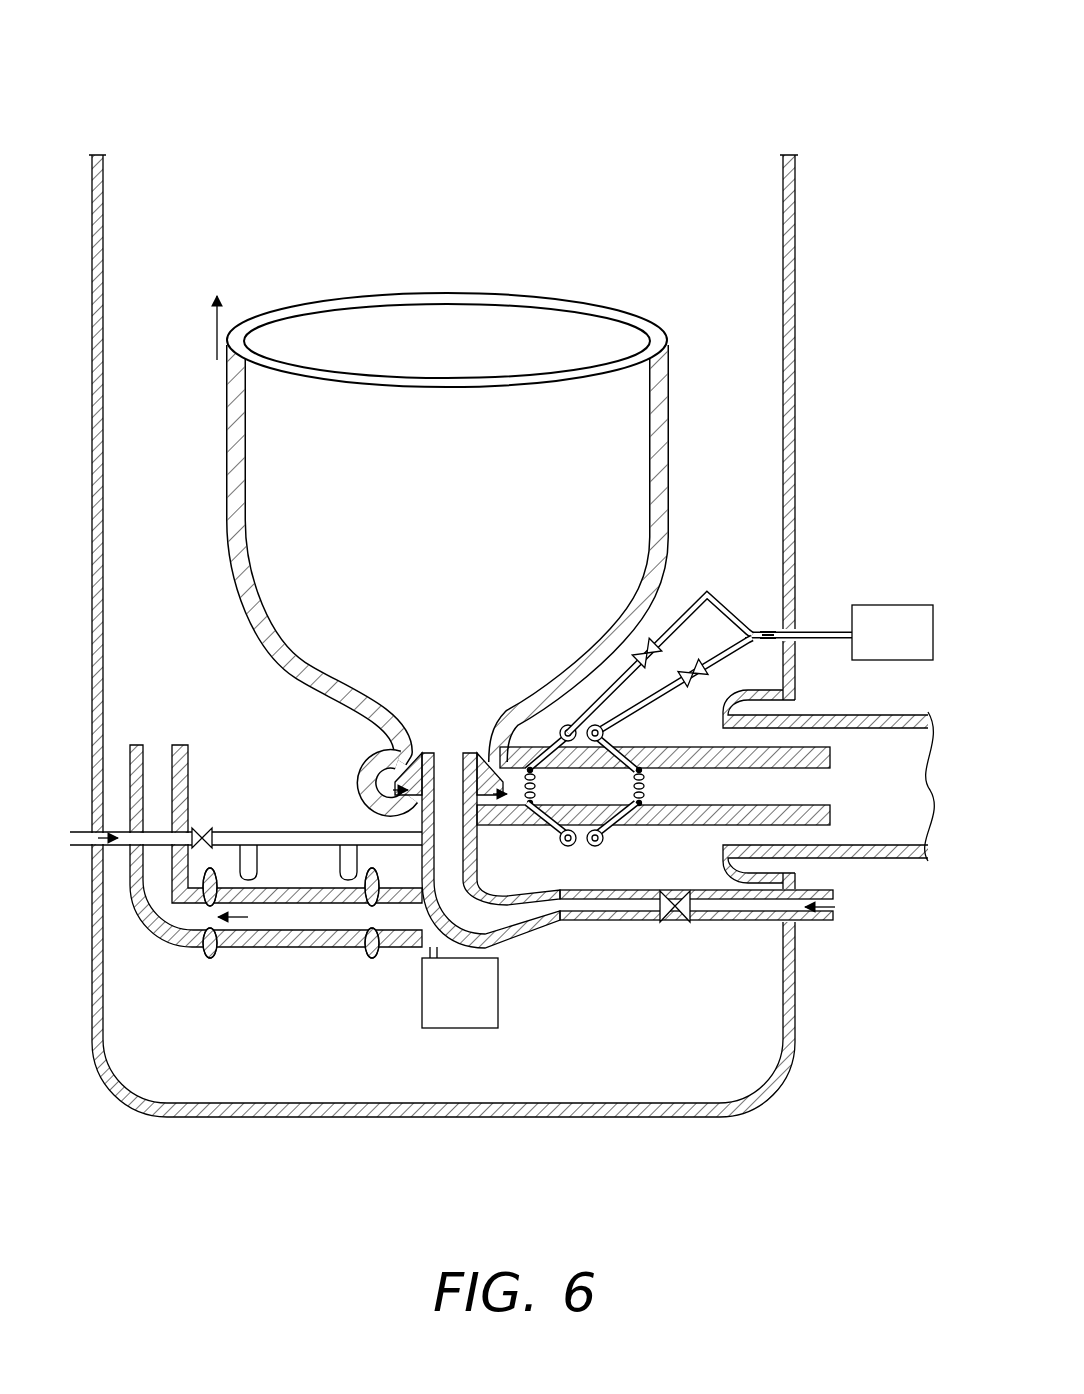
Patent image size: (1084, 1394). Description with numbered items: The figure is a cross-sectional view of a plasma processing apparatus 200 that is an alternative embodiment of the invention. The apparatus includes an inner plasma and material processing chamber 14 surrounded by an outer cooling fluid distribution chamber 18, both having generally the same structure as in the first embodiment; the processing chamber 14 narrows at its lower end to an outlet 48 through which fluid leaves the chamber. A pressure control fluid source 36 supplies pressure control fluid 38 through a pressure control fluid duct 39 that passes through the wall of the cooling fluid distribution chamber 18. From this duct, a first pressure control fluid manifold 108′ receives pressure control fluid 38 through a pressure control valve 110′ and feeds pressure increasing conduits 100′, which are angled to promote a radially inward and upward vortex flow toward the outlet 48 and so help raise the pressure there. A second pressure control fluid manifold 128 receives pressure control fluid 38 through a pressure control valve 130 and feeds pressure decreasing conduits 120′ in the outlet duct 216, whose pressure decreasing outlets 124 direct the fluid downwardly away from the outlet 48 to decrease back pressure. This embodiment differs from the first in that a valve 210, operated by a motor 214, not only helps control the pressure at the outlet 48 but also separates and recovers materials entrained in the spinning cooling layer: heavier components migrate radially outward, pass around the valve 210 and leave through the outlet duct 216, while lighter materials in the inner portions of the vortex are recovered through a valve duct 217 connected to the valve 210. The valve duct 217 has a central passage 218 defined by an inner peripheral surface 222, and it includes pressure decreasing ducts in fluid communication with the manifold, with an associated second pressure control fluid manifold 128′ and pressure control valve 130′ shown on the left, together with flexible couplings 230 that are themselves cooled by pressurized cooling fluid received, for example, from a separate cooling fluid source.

The plasma processing apparatus 200 is at (840, 96).
The cooling fluid distribution chamber 18 is at (800, 250).
The plasma and material processing chamber 14 is at (220, 462).
The pressure control valve 110′ is at (643, 645).
The second pressure control fluid manifold 128 is at (640, 688).
The pressure control fluid 38 is at (92, 833).
The pressure control fluid duct 39 is at (812, 630).
The pressure control fluid source 36 is at (900, 605).
The first pressure control fluid manifold 108′ is at (556, 730).
The pressure control valve 130 is at (740, 677).
The pressure increasing conduits 100′ is at (548, 745).
The outlet 48 is at (458, 729).
The pressure decreasing conduits 120′ is at (612, 733).
The inner peripheral surface 222 is at (740, 768).
The pressure control valve 130′ is at (200, 828).
The second pressure control fluid manifold 128′ is at (220, 830).
The valve 210 is at (372, 782).
The central passage 218 is at (447, 838).
The pressure decreasing outlets 124 is at (623, 770).
The outlet duct 216 is at (705, 825).
The flexible couplings 230 is at (205, 960).
The valve duct 217 is at (318, 950).
The motor 214 is at (468, 1010).